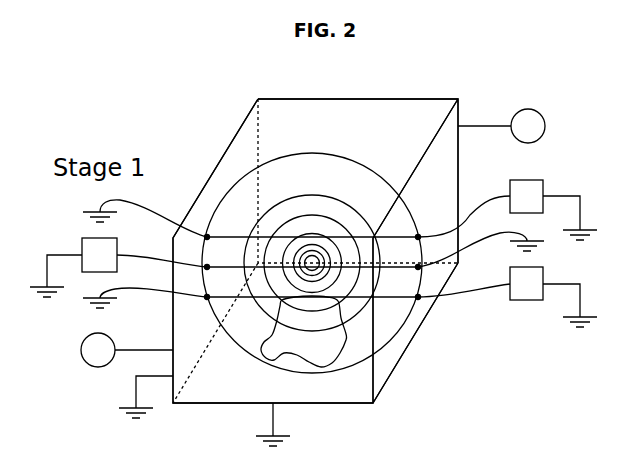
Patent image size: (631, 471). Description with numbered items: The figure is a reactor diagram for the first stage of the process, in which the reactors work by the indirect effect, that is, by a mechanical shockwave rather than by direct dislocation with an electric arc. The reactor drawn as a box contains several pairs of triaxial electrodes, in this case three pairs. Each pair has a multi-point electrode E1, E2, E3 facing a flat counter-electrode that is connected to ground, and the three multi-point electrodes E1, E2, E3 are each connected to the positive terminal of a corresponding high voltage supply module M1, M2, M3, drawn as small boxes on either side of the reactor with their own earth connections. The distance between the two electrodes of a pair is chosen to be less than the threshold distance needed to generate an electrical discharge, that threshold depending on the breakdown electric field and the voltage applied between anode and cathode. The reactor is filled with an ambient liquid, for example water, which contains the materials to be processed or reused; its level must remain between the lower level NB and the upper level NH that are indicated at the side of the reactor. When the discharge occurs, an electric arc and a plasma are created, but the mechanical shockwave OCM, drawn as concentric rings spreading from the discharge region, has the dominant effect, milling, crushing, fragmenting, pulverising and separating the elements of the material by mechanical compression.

The mechanical shockwave OCM is at (314, 148).
The plasma / particle region P is at (357, 337).
The multi-point electrode E1 is at (296, 218).
The multi-point electrode E2 is at (330, 250).
The multi-point electrode E3 is at (296, 294).
The high voltage supply module M1 is at (553, 210).
The high voltage supply module M2 is at (73, 267).
The high voltage supply module M3 is at (553, 297).
The upper level NH is at (501, 126).
The lower level NB is at (127, 350).